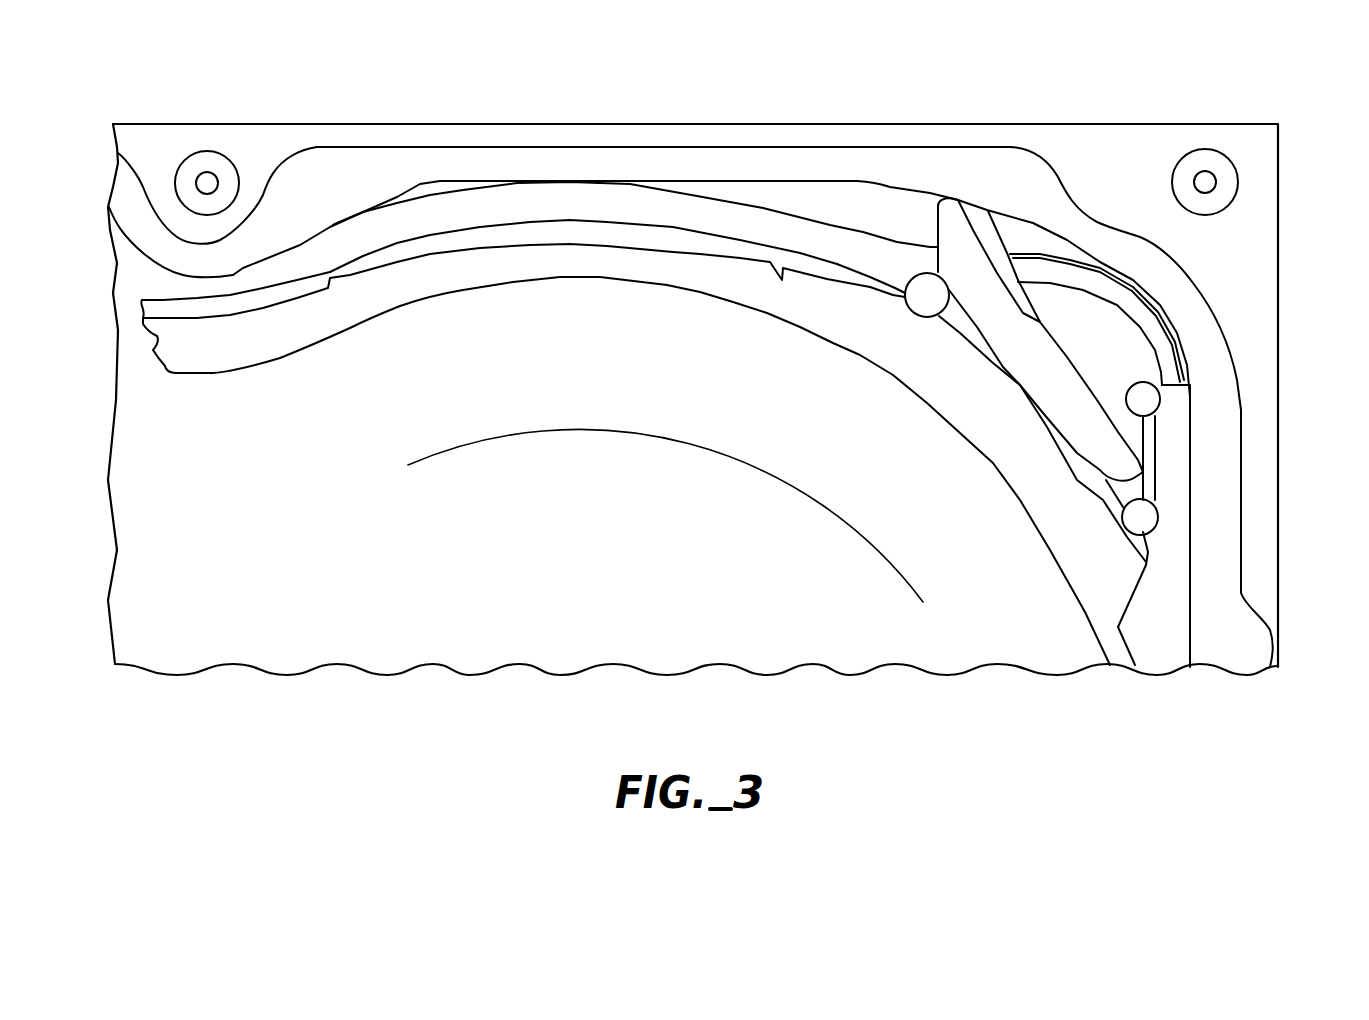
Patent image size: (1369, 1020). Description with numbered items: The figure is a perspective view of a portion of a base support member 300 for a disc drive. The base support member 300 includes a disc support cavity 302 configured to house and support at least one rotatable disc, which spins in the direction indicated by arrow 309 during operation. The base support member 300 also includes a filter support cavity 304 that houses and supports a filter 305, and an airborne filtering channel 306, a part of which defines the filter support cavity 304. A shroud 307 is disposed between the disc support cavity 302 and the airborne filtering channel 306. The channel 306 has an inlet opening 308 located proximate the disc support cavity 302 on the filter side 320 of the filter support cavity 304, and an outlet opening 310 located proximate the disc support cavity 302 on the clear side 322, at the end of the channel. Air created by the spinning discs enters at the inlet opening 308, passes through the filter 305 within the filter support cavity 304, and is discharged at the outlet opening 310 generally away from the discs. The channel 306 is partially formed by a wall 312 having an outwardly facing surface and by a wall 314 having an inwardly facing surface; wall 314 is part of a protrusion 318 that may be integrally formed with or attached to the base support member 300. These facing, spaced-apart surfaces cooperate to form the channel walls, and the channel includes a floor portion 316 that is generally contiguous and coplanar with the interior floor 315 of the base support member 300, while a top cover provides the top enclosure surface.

The base support member 300 is at (257, 733).
The disc support cavity 302 is at (815, 612).
The filter support cavity 304 is at (1103, 372).
The filter 305 is at (1018, 328).
The airborne filtering channel 306 is at (650, 210).
The shroud 307 is at (773, 263).
The inlet opening 308 is at (1157, 623).
The arrow 309 is at (613, 430).
The outlet opening 310 is at (160, 297).
The wall 312 is at (443, 230).
The wall 314 is at (575, 187).
The interior floor 315 is at (133, 393).
The boss wall 316 is at (237, 290).
The protrusion 318 is at (717, 188).
The filter side 320 is at (1163, 473).
The clear side 322 is at (375, 235).